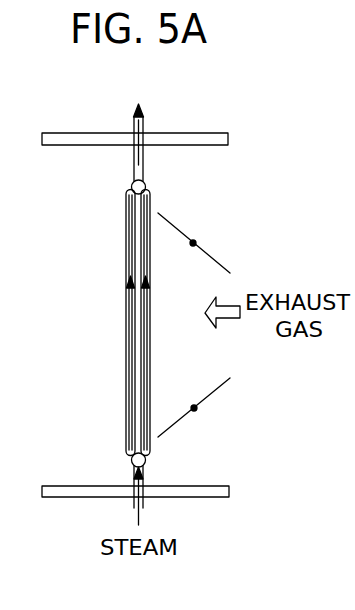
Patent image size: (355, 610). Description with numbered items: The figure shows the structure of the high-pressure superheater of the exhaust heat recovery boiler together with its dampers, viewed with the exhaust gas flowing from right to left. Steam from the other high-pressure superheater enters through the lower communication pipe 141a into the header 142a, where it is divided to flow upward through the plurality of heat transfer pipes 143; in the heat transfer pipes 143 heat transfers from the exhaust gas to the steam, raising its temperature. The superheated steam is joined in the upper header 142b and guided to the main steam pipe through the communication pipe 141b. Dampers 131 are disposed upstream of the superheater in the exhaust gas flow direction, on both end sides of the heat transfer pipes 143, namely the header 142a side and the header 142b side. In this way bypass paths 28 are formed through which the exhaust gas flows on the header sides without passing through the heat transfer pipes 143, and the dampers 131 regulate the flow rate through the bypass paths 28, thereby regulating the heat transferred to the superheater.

The bypass path 28 is at (178, 166).
The damper 131 is at (218, 260).
The communication pipe 141a is at (143, 506).
The communication pipe 141b is at (143, 126).
The header 142a is at (131, 460).
The header 142b is at (131, 187).
The heat transfer pipe 143 is at (132, 373).